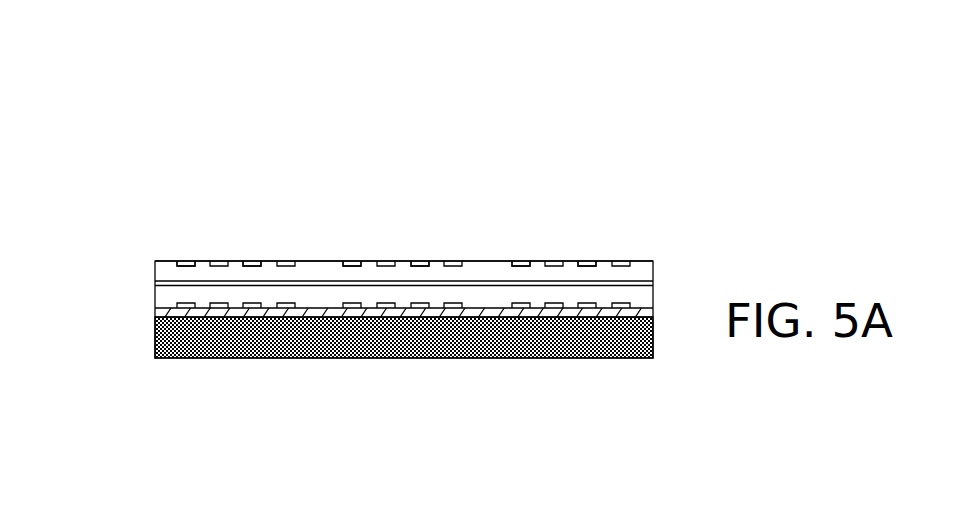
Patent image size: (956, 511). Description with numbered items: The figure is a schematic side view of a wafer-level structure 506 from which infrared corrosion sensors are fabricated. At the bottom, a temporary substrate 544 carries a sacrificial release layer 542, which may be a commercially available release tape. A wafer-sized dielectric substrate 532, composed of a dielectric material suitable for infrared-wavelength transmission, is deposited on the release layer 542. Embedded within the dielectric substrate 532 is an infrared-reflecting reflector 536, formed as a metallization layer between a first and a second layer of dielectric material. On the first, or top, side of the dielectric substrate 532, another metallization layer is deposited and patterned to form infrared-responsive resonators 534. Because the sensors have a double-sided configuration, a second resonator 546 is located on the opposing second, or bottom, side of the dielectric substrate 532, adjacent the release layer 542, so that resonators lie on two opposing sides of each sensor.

The wafer-level structure 506 is at (155, 123).
The dielectric substrate 532 is at (154, 270).
The IR-responsive resonators 534 is at (251, 237).
The reflector 536 is at (154, 284).
The sacrificial release layer 542 is at (154, 307).
The temporary substrate 544 is at (217, 358).
The second resonator 546 is at (258, 336).